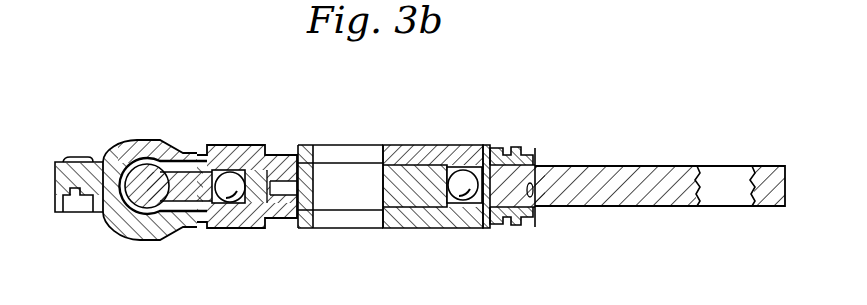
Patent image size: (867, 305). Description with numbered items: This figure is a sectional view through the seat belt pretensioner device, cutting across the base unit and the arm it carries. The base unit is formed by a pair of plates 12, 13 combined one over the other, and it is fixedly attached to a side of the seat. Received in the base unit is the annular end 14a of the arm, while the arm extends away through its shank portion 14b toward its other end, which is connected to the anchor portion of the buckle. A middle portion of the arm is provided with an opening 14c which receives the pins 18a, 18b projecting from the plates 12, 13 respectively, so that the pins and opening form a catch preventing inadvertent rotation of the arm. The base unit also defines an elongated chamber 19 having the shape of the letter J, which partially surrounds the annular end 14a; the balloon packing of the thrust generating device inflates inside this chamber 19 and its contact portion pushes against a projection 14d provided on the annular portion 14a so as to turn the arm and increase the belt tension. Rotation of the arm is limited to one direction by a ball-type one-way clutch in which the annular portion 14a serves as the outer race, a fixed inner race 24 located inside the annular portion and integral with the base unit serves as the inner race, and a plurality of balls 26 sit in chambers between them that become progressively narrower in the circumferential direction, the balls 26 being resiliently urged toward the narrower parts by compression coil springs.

The plate 12 is at (155, 233).
The plate 13 is at (150, 143).
The annular end 14a is at (483, 165).
The pin shaft 14b is at (672, 170).
The opening 14c is at (530, 205).
The projection 14d is at (199, 227).
The pin 18a is at (500, 207).
The pin 18b is at (526, 168).
The elongated chamber 19 is at (113, 160).
The fixed inner race 24 is at (390, 202).
The balls 26 is at (238, 176).